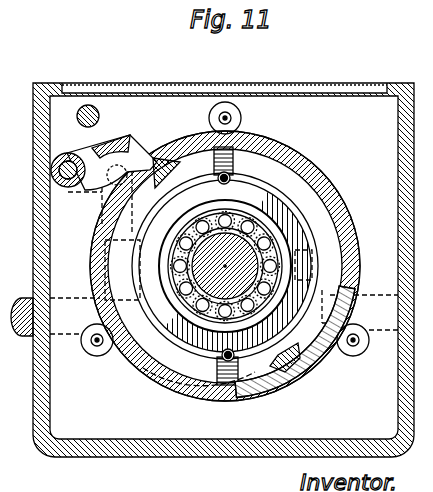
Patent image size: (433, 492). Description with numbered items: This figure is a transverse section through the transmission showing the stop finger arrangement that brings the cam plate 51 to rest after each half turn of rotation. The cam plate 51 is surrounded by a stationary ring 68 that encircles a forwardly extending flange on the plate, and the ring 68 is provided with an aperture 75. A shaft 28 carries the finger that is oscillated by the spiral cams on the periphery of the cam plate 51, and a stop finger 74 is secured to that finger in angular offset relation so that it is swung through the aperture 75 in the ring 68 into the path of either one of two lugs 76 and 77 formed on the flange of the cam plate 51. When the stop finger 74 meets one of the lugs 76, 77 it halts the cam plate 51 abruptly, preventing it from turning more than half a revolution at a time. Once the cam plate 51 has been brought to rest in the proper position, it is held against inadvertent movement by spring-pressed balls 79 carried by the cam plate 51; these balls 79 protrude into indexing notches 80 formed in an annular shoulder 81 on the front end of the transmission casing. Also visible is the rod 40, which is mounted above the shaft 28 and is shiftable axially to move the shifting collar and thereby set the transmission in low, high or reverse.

The shaft 28 is at (70, 188).
The rod 40 is at (76, 116).
The cam plate 51 is at (338, 195).
The stationary ring 68 is at (290, 152).
The stop finger 74 is at (130, 135).
The aperture 75 is at (143, 157).
The lug 76 is at (168, 182).
The lug 77 is at (303, 365).
The spring-pressed balls 79 is at (232, 170).
The indexing notches 80 is at (226, 181).
The annular shoulder 81 is at (310, 232).